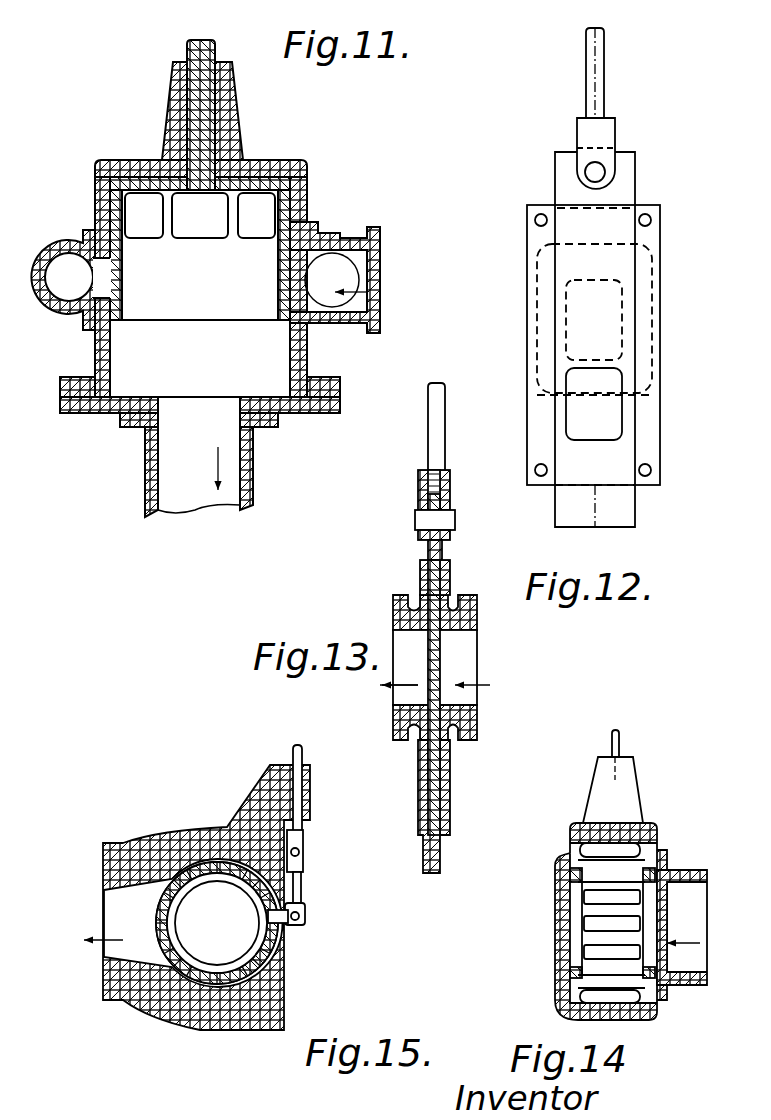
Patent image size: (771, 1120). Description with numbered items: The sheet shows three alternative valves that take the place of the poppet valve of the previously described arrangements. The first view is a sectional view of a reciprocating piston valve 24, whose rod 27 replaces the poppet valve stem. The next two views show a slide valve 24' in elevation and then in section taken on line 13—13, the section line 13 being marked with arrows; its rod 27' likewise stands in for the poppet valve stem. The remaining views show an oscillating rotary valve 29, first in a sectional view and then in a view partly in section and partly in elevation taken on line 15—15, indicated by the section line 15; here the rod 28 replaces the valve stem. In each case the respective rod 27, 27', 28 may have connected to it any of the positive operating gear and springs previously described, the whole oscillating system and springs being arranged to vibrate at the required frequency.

In FIG. 12, the section line 13— 13 is at (580, 12).
In FIG. 14, the section line 15— 15 is at (615, 713).
In FIG. 11, the reciprocating piston valve 24 is at (335, 267).
In FIG. 12, the slide valve 24' is at (640, 153).
In FIG. 13, the slide valve 24' is at (407, 532).
In FIG. 11, the rod 27 is at (265, 115).
In FIG. 12, the rod 27' is at (645, 73).
In FIG. 13, the rod 27' is at (404, 429).
In FIG. 15, the rod 28 is at (298, 778).
In FIG. 14, the rod 28 is at (621, 738).
In FIG. 15, the oscillating rotary valve 29 is at (272, 946).
In FIG. 14, the oscillating rotary valve 29 is at (570, 978).